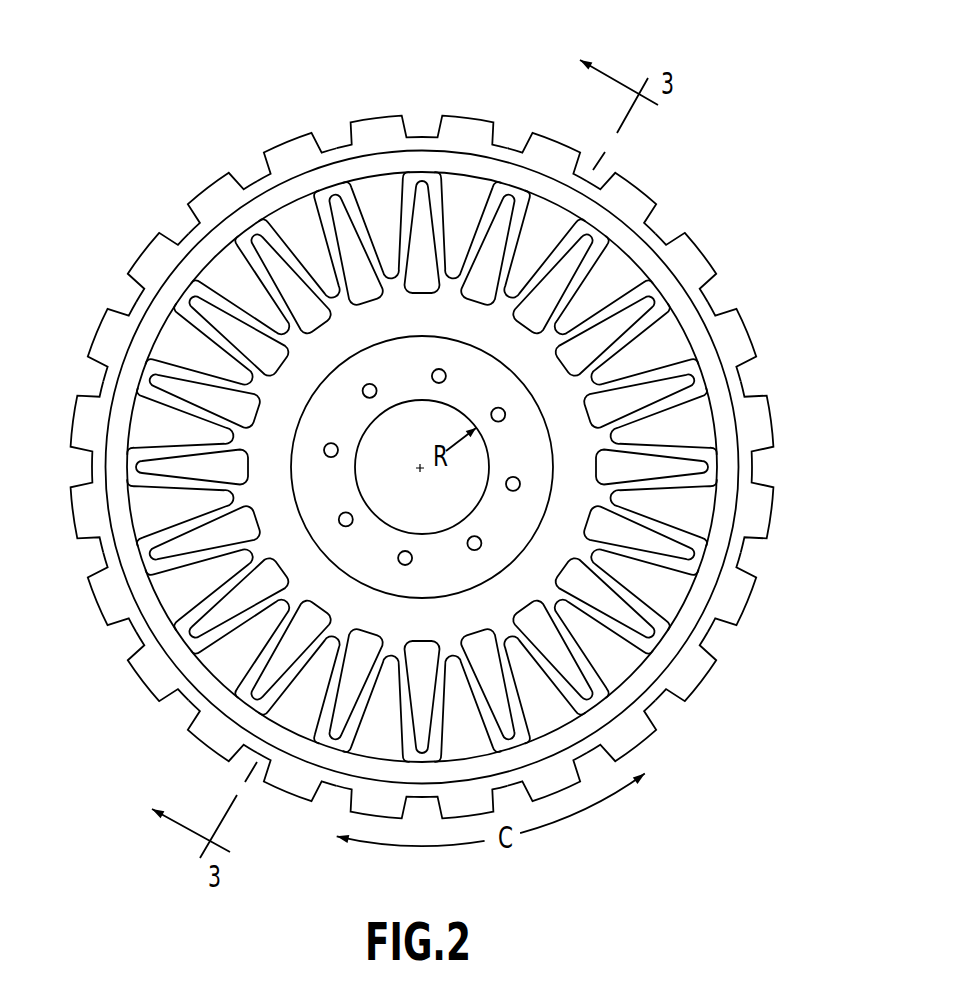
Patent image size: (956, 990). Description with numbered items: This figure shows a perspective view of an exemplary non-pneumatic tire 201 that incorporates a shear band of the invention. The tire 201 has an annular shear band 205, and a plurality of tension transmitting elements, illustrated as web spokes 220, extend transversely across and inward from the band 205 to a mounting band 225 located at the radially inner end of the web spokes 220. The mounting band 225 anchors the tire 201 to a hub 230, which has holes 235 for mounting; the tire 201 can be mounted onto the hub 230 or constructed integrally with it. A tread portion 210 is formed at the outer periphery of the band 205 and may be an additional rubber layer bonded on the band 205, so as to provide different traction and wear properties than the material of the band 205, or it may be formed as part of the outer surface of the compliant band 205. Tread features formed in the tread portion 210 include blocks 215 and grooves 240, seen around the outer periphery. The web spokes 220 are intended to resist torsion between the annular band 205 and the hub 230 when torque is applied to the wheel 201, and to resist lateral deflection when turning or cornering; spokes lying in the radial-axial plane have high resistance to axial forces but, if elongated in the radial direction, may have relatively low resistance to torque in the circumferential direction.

The non-pneumatic tire 201 is at (182, 117).
The annular shear band 205 is at (672, 294).
The tread portion 210 is at (758, 423).
The blocks 215 is at (287, 140).
The web spokes 220 is at (160, 418).
The mounting band 225 is at (303, 553).
The hub 230 is at (520, 508).
The holes 235 is at (483, 545).
The grooves 240 is at (173, 222).